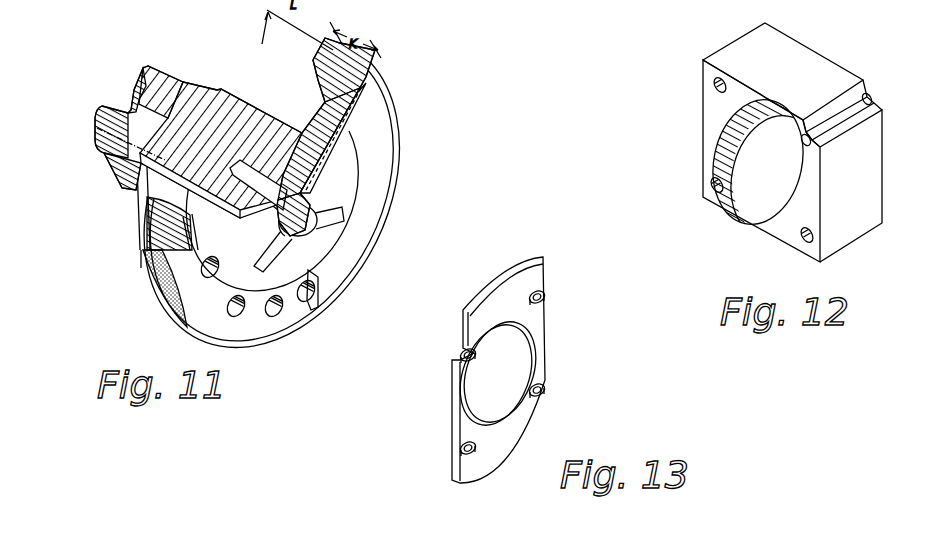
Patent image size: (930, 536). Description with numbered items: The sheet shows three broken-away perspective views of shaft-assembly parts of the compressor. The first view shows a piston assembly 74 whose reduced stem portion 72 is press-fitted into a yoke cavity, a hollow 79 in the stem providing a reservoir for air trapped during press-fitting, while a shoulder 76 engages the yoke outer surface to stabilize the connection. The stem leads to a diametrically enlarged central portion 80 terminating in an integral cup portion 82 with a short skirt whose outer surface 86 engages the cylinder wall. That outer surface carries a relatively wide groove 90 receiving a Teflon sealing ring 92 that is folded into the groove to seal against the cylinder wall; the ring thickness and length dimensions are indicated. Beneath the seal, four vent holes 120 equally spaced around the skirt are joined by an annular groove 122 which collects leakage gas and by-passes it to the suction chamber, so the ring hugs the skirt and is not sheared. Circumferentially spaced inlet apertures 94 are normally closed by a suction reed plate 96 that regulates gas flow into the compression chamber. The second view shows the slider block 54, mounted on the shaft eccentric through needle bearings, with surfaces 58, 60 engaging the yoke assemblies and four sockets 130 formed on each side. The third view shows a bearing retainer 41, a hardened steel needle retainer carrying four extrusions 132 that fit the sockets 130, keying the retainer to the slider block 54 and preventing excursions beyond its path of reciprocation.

In FIG. 11, the piston stem portion 72 is at (97, 128).
In FIG. 11, the hollow 79 is at (132, 112).
In FIG. 11, the shoulder 76 is at (180, 80).
In FIG. 11, the diametrically enlarged central portion 80 is at (238, 83).
In FIG. 11, the cup portion 82 is at (315, 130).
In FIG. 11, the outer surface 86 is at (312, 58).
In FIG. 11, the vent holes 120 is at (350, 88).
In FIG. 11, the annular groove 122 is at (143, 225).
In FIG. 11, the groove 90 is at (163, 210).
In FIG. 11, the sealing ring 92 is at (167, 297).
In FIG. 11, the piston assembly 74 is at (133, 271).
In FIG. 11, the inlet apertures 94 is at (338, 100).
In FIG. 11, the suction reed plate 96 is at (378, 172).
In FIG. 12, the slider block 54 is at (730, 47).
In FIG. 12, the slider block surface 58 is at (777, 60).
In FIG. 12, the slider block surface 60 is at (705, 140).
In FIG. 12, the sockets 130 is at (869, 96).
In FIG. 13, the bearing retainer 41 is at (507, 272).
In FIG. 13, the extrusions 132 is at (463, 350).